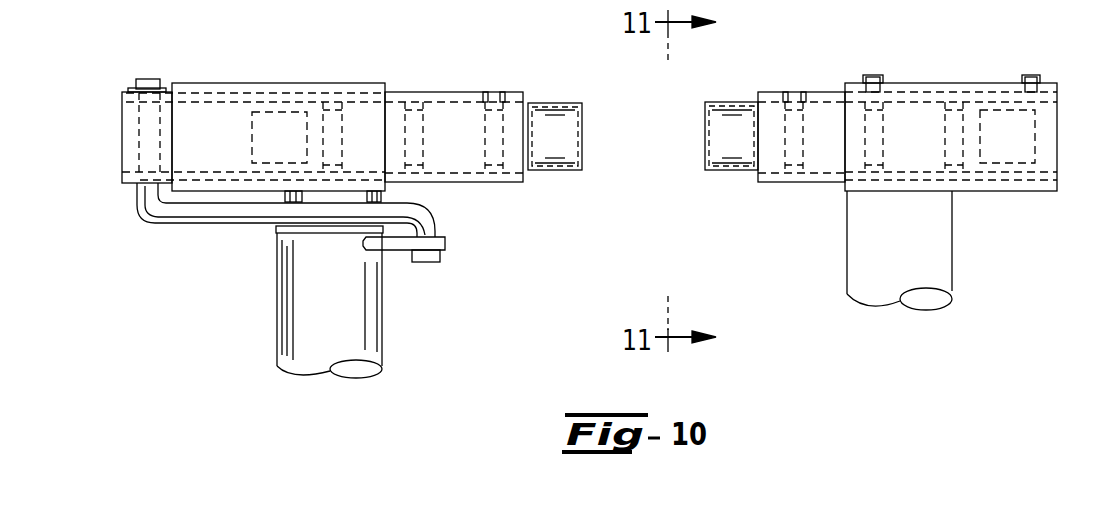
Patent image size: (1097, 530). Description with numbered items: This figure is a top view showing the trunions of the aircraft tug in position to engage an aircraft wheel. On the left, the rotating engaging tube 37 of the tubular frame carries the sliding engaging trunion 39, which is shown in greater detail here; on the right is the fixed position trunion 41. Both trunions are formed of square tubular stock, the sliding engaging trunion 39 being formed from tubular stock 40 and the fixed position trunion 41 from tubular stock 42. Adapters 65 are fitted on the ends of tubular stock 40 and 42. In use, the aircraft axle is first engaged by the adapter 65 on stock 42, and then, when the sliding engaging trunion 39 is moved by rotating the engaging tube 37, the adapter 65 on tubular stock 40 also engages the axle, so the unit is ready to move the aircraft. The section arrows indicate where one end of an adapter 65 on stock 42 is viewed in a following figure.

The engaging tube 37 is at (277, 295).
The engaging trunion 39 is at (330, 83).
The square tubular stock 40 is at (428, 92).
The fixed position trunion 41 is at (940, 83).
The square tubular stock 42 is at (828, 92).
The adapter 65 is at (553, 103).